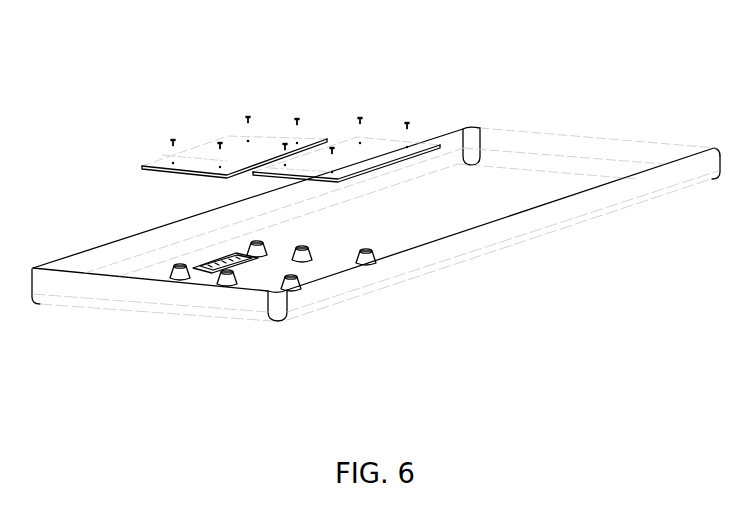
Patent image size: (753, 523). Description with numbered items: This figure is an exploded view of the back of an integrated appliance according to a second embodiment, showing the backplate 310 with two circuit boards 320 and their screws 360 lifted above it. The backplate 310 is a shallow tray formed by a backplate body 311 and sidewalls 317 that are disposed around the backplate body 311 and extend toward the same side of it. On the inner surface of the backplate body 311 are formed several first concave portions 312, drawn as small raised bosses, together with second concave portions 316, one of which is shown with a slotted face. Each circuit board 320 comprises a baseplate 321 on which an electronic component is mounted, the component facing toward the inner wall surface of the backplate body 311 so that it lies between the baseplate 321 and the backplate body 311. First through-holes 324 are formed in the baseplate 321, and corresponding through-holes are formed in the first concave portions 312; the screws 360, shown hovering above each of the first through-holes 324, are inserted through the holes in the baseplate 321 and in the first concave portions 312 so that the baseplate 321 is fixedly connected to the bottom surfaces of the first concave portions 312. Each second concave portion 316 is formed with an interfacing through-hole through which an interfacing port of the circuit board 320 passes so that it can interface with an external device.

The backplate 310 is at (493, 267).
The backplate body 311 is at (482, 202).
The first concave portion 312 is at (312, 247).
The second concave portion 316 is at (210, 263).
The sidewall 317 is at (678, 175).
The circuit board 320 is at (240, 157).
The baseplate 321 is at (162, 155).
The first through-hole 324 is at (248, 140).
The screw 360 is at (360, 117).